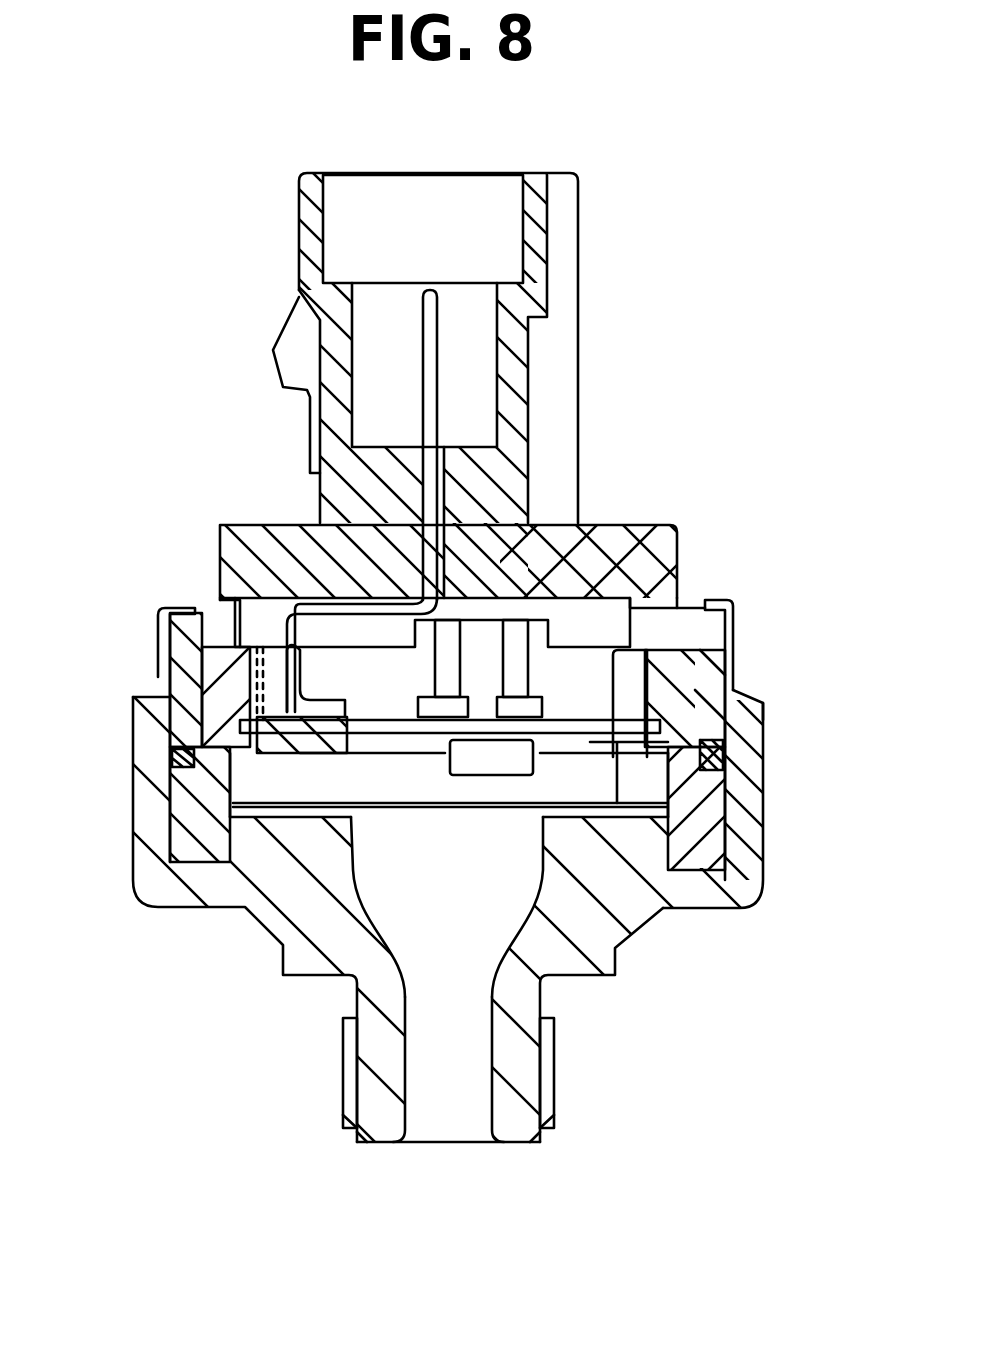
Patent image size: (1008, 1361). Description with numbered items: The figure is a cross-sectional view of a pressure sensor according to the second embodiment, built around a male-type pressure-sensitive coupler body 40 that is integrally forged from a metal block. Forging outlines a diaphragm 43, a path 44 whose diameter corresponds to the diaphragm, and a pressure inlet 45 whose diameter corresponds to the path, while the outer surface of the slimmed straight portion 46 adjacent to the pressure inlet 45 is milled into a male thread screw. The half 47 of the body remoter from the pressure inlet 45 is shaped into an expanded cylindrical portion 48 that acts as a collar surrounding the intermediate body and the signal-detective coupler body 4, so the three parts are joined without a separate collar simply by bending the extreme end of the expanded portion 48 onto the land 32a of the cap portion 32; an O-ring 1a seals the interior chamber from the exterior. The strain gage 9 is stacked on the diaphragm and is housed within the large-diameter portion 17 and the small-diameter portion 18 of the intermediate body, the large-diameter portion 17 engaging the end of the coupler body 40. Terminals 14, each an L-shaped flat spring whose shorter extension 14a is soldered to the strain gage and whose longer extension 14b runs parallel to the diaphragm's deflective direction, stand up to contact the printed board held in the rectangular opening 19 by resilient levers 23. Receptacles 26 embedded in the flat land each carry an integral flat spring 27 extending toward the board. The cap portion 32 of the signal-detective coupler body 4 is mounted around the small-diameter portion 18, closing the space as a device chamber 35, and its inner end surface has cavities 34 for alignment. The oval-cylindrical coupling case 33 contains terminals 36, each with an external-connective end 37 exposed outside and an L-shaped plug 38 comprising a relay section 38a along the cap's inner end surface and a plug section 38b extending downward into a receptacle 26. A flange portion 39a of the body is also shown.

The signal-detective coupler body 4 is at (300, 215).
The coupling case 33 is at (578, 215).
The terminal 36 is at (475, 392).
The external-connective end 37 is at (437, 340).
The rectangular opening 19 is at (343, 607).
The plug 38 is at (100, 482).
The relay section 38a is at (262, 525).
The plug section 38b is at (222, 600).
The device chamber 35 is at (598, 603).
The land 32a is at (687, 607).
The lever 23 is at (485, 640).
The small-diameter portion 18 is at (723, 603).
The expanded cylindrical portion 48 is at (740, 657).
The cap portion 32 is at (718, 697).
The terminal 14 is at (845, 695).
The shorter extension 14a is at (720, 773).
The longer extension 14b is at (697, 740).
The large-diameter portion 17 is at (707, 820).
The cavity 34 is at (163, 608).
The O-ring 1a is at (170, 757).
The receptacle 26 is at (240, 660).
The flat spring 27 is at (332, 753).
The strain gage 9 is at (368, 803).
The male-type pressure-sensitive coupler body 40 is at (245, 933).
The body flange 39a is at (766, 900).
The half 47 is at (627, 917).
The diaphragm 43 is at (392, 820).
The path 44 is at (545, 982).
The pressure inlet 45 is at (428, 1125).
The slimmed straight portion 46 is at (560, 1093).